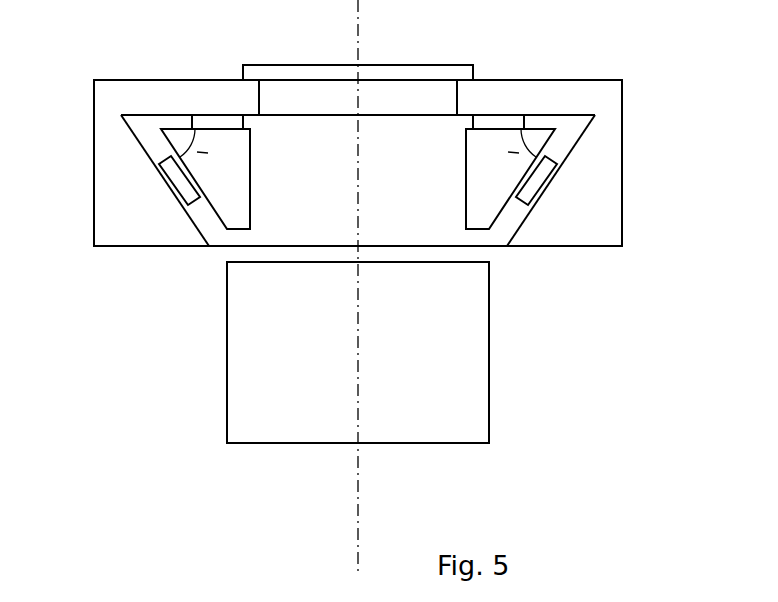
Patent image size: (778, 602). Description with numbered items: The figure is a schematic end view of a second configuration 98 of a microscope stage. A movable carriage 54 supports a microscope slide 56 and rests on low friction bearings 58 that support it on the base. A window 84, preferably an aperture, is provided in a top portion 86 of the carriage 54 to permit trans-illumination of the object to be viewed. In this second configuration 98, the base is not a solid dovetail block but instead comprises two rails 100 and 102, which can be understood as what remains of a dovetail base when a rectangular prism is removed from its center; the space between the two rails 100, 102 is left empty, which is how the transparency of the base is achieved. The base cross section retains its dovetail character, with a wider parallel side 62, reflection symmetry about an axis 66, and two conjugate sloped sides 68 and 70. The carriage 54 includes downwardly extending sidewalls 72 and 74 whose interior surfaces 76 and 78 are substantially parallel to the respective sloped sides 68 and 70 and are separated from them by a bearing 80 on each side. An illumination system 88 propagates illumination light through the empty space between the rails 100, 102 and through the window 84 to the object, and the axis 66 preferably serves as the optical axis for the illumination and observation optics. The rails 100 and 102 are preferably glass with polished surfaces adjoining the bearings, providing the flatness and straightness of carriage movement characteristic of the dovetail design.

The movable carriage 54 is at (170, 90).
The microscope slide 56 is at (445, 70).
The low friction bearings 58 is at (215, 122).
The parallel side 62 is at (453, 128).
The axis 66 is at (358, 497).
The sloped side 68 is at (552, 142).
The sloped side 70 is at (143, 148).
The sidewall 72 is at (613, 200).
The sidewall 74 is at (118, 222).
The interior surface 76 is at (573, 152).
The interior surface 78 is at (150, 156).
The bearing 80 is at (525, 193).
The window 84 is at (313, 97).
The top portion 86 is at (132, 89).
The illumination system 88 is at (453, 413).
The second configuration 98 is at (178, 383).
The rail 100 is at (493, 176).
The rail 102 is at (227, 230).